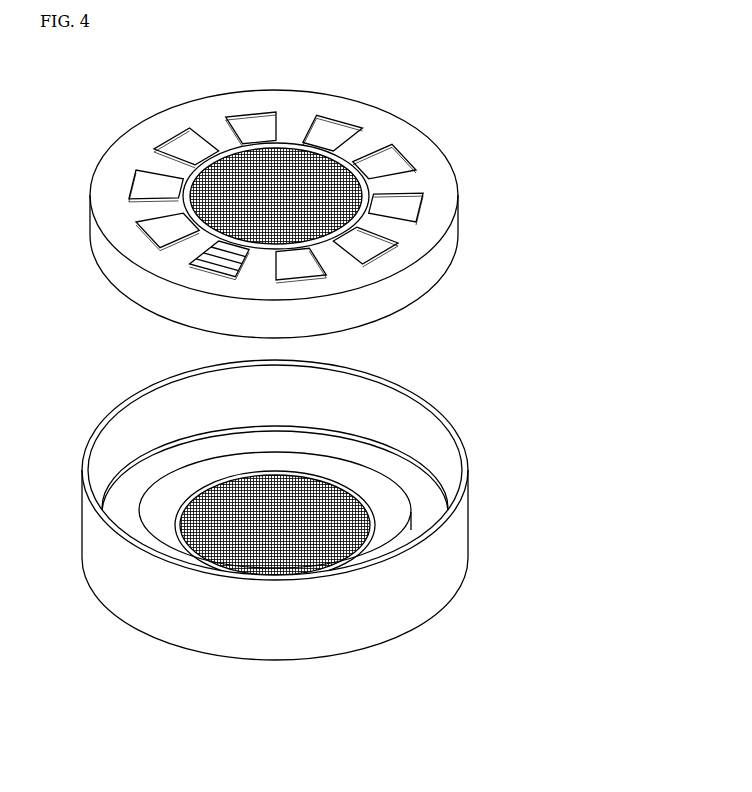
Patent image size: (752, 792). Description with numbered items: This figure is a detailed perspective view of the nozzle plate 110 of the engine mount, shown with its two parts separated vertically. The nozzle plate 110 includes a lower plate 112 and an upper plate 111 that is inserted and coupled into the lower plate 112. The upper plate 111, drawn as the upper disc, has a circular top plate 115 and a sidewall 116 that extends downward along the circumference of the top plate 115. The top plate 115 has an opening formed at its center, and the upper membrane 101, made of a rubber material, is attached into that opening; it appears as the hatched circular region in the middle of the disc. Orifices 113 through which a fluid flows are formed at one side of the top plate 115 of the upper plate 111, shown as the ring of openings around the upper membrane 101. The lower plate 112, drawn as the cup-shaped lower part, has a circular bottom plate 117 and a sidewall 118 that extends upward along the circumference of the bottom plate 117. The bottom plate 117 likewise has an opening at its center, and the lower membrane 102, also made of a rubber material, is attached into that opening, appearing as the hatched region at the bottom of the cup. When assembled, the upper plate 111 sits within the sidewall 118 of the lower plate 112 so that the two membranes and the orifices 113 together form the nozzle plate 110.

The upper membrane 101 is at (223, 183).
The lower membrane 102 is at (298, 557).
The nozzle plate 110 is at (575, 211).
The upper plate 111 is at (462, 213).
The lower plate 112 is at (472, 510).
The orifices 113 is at (213, 262).
The top plate 115 is at (388, 259).
The sidewall 116 is at (392, 293).
The bottom plate 117 is at (417, 510).
The sidewall 118 is at (155, 602).